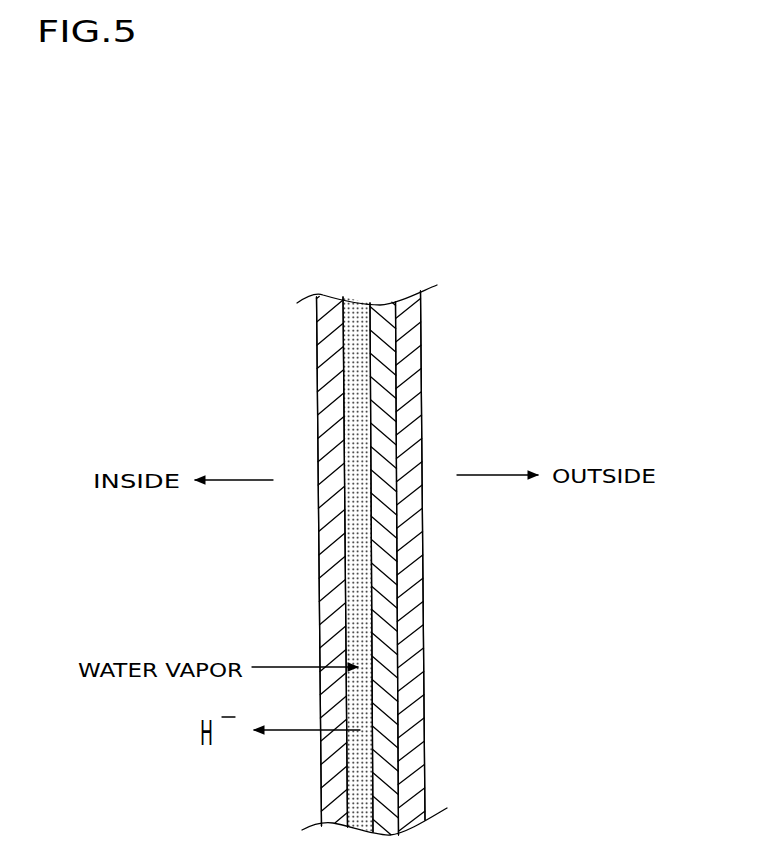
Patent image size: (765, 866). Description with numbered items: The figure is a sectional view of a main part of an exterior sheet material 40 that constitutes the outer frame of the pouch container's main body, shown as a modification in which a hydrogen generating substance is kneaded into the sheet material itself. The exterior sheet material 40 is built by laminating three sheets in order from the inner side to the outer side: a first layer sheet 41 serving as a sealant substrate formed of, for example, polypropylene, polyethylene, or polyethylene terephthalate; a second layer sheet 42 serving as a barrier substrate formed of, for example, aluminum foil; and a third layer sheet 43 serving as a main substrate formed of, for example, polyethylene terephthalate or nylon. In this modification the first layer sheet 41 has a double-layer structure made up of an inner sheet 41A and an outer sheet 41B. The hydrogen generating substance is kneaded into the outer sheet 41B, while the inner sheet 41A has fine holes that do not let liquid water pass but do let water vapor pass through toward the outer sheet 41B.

The exterior sheet material 40 is at (446, 486).
The first layer sheet 41 is at (325, 485).
The inner sheet 41A is at (327, 304).
The outer sheet 41B is at (357, 303).
The second layer sheet 42 is at (382, 313).
The third layer sheet 43 is at (410, 298).